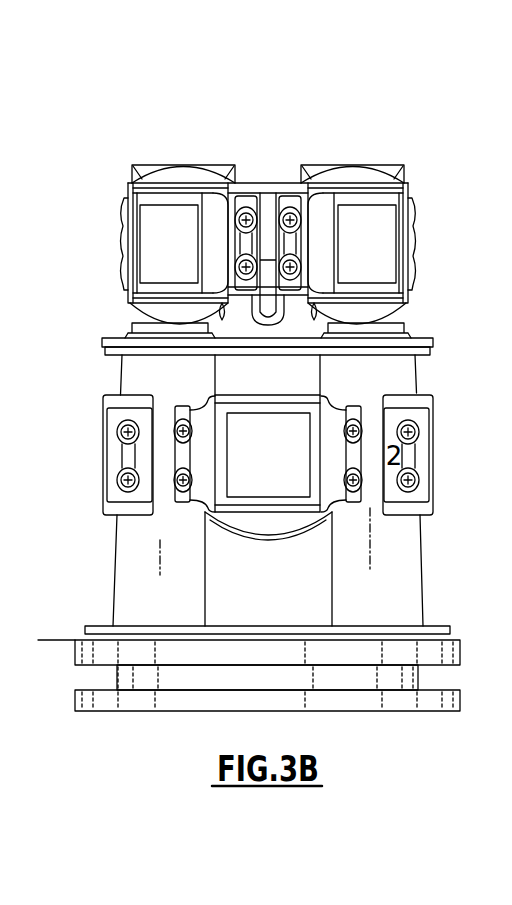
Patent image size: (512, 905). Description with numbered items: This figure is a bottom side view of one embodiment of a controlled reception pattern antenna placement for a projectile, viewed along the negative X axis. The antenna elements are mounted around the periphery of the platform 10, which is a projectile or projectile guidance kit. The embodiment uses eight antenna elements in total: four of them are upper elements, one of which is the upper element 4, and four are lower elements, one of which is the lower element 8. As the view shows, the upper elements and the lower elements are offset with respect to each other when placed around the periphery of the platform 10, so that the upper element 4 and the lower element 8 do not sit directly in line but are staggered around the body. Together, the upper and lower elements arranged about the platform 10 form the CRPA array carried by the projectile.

The upper element 4 is at (176, 172).
The lower element 8 is at (240, 428).
The platform 10 is at (136, 594).